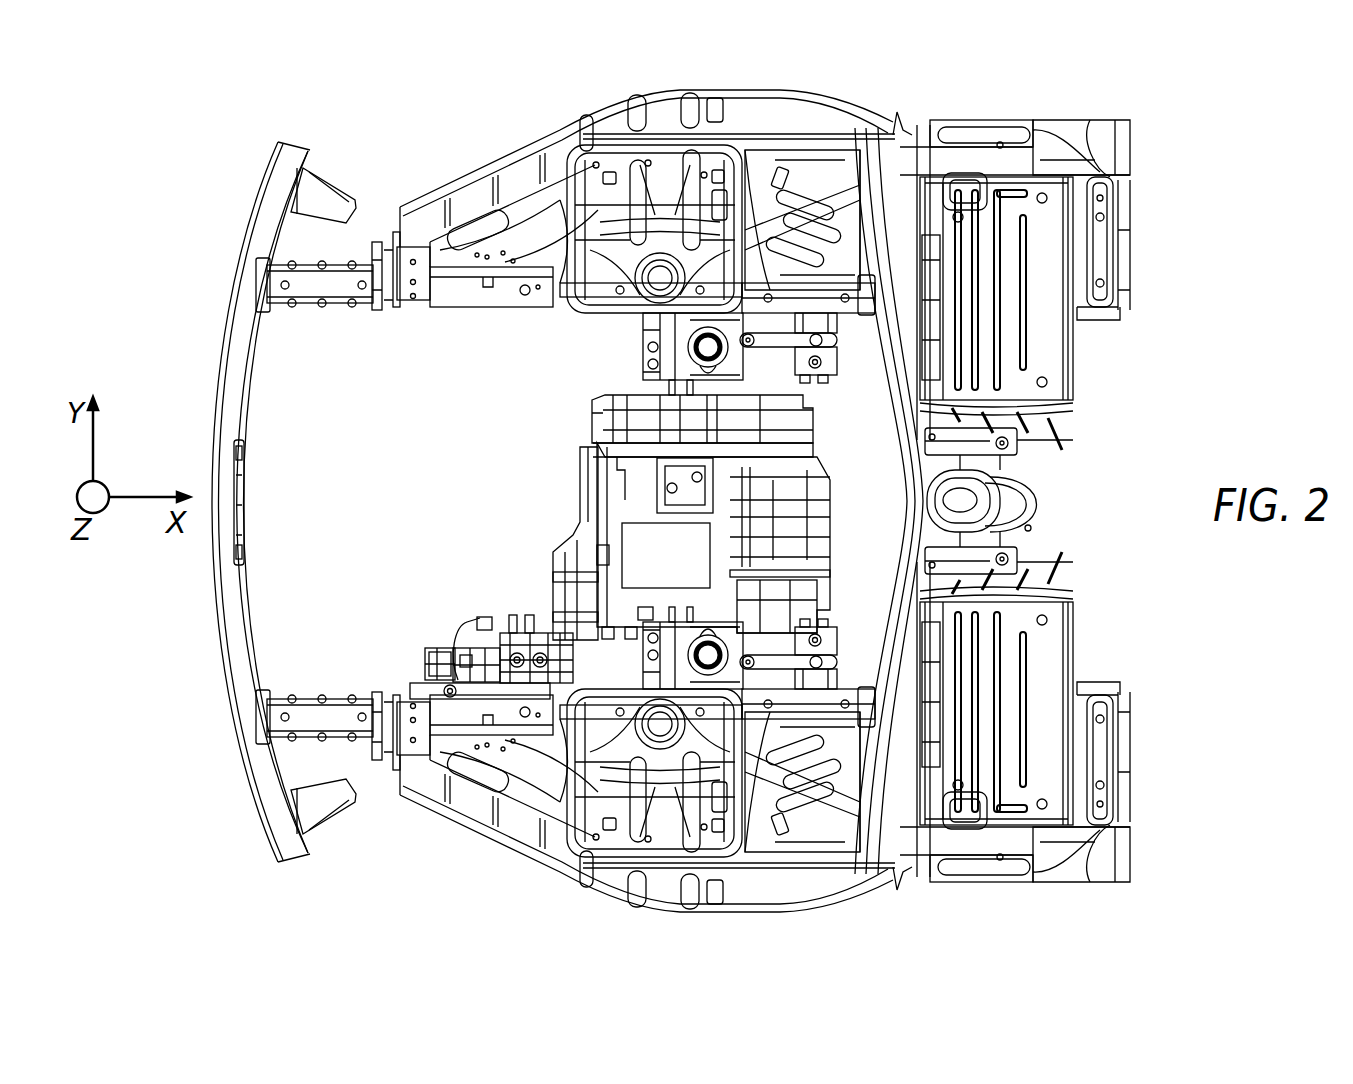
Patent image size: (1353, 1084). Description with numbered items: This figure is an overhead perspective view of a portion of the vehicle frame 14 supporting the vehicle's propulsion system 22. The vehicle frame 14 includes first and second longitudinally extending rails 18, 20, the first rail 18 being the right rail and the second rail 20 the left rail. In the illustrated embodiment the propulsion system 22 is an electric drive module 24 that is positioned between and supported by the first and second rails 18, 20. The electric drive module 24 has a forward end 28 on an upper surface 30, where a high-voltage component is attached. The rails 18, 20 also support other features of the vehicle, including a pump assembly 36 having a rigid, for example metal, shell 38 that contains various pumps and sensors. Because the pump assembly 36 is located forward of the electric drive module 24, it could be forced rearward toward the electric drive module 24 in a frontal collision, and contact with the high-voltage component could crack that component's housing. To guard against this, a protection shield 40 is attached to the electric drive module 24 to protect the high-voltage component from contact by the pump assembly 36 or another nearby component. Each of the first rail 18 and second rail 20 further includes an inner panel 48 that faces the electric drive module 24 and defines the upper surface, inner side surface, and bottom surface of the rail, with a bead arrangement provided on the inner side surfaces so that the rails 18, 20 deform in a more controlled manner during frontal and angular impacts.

The vehicle frame 14 is at (220, 86).
The first rail 18 is at (458, 287).
The second rail 20 is at (523, 717).
The propulsion system 22 is at (642, 347).
The electric drive module 24 is at (841, 358).
The forward end 28 is at (775, 513).
The upper surface 30 is at (790, 565).
The pump assembly 36 is at (450, 650).
The rigid shell 38 is at (425, 657).
The protection shield 40 is at (549, 569).
The inner panel 48 is at (536, 310).